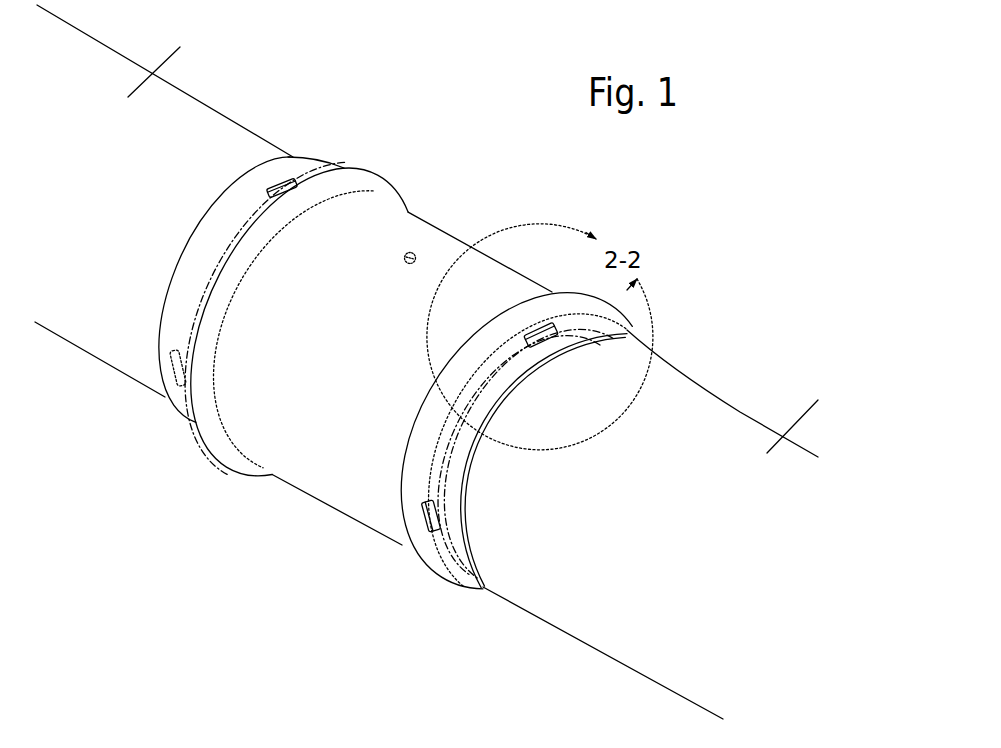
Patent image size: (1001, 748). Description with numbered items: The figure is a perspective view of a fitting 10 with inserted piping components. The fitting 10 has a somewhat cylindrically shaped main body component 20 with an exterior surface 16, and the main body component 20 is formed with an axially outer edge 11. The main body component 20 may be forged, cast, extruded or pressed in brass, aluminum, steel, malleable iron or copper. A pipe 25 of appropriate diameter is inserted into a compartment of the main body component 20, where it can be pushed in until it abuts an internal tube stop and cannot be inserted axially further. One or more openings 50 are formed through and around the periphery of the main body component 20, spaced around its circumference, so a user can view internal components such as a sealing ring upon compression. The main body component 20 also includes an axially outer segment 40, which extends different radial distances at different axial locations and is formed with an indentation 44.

The fitting 10 is at (767, 193).
The axially outer edge 11 is at (483, 590).
The exterior surface 16 is at (307, 464).
The main body component 20 is at (405, 222).
The pipe 25 is at (490, 233).
The axially outer segment 40 is at (458, 566).
The indentation 44 is at (374, 181).
The openings 50 is at (286, 185).